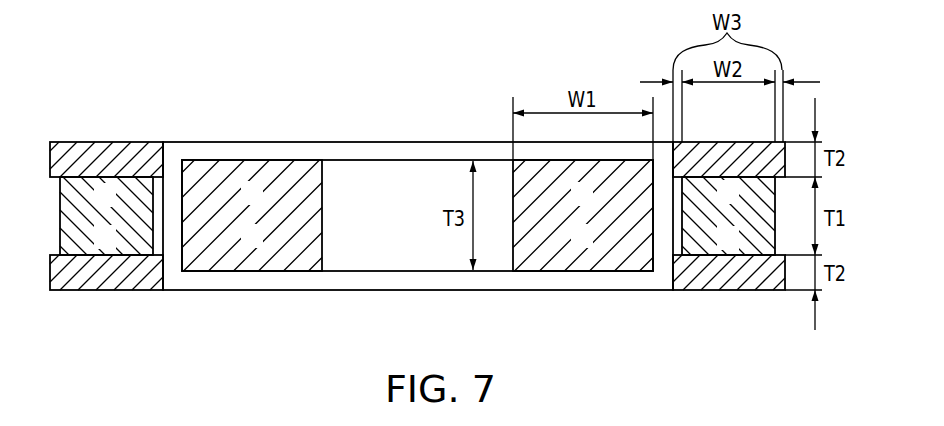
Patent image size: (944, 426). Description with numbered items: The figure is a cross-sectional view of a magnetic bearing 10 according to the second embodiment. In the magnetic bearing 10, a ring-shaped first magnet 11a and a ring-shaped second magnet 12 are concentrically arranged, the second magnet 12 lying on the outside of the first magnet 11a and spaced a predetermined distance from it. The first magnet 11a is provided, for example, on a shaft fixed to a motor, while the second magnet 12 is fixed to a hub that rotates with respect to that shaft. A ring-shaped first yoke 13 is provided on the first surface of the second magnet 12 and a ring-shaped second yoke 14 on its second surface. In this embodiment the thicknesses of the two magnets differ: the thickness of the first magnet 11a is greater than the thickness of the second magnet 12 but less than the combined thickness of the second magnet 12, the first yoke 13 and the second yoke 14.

The magnetic bearing 10 is at (433, 105).
The first magnet 11a is at (322, 218).
The second magnet 12 is at (80, 238).
The first yoke 13 is at (118, 148).
The second yoke 14 is at (127, 282).